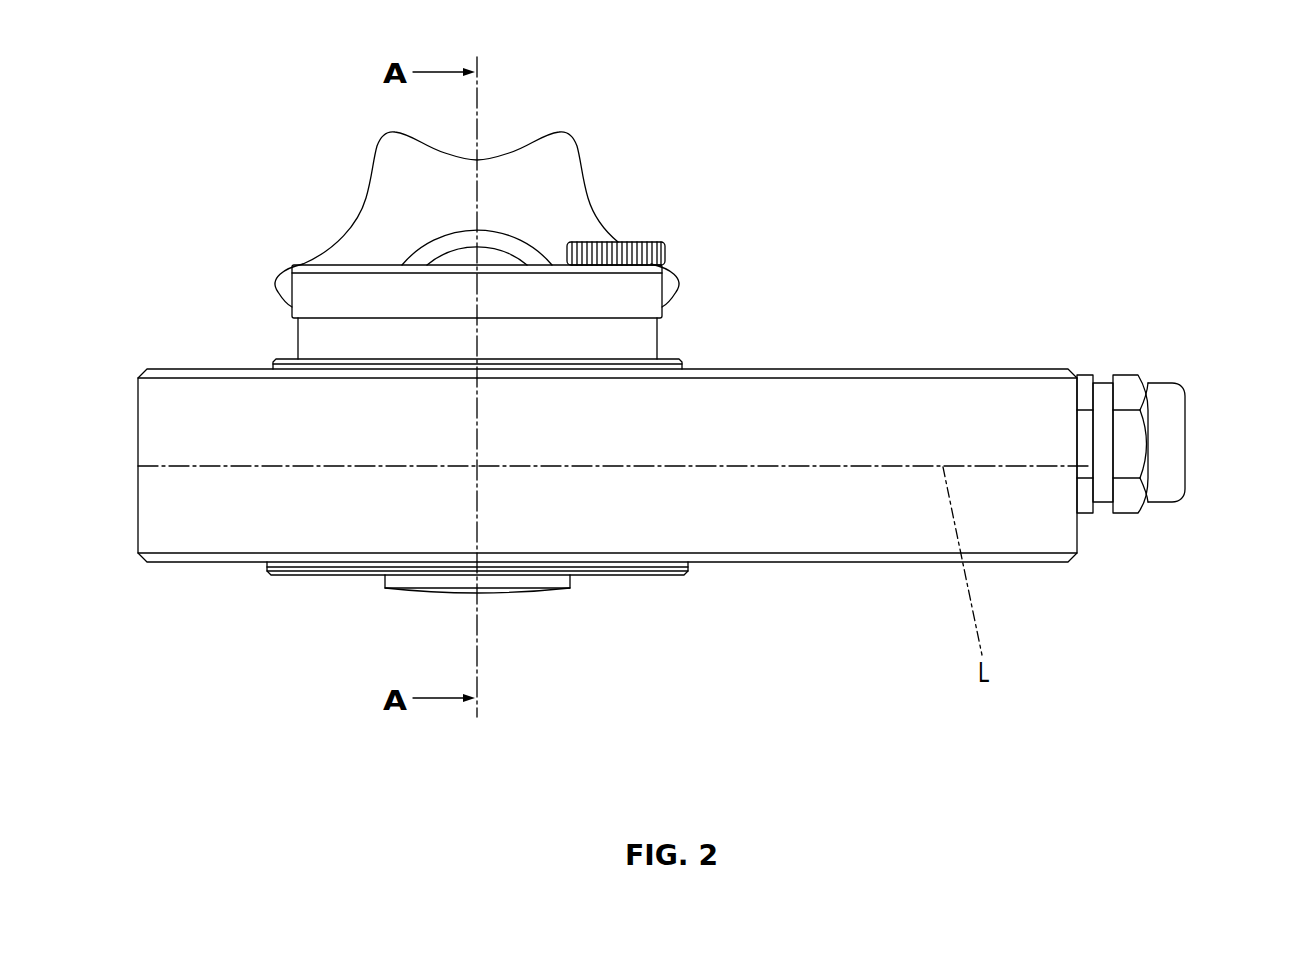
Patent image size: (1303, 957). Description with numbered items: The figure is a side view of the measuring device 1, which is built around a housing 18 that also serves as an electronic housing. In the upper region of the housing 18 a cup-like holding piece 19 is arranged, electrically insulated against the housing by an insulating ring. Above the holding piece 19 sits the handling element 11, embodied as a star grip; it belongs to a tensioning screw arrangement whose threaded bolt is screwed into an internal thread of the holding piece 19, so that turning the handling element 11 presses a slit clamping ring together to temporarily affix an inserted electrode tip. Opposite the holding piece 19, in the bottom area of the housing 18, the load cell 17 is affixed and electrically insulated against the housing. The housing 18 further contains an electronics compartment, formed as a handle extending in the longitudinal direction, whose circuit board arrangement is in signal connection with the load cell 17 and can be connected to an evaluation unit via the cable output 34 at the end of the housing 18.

The measuring device 1 is at (725, 242).
The handling element 11 is at (575, 195).
The load cell 17 is at (507, 578).
The housing 18 is at (785, 567).
The holding piece 19 is at (673, 342).
The cable output 34 is at (1168, 437).